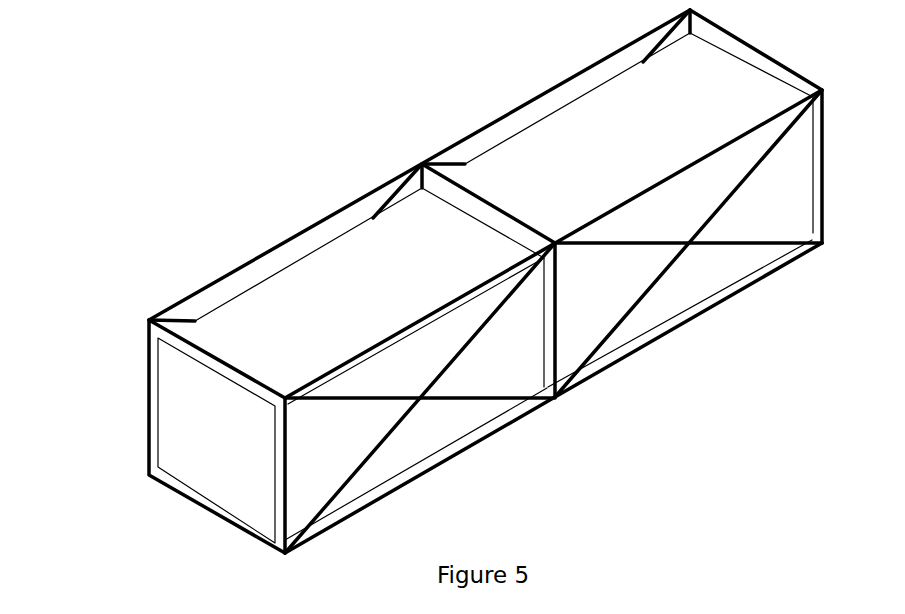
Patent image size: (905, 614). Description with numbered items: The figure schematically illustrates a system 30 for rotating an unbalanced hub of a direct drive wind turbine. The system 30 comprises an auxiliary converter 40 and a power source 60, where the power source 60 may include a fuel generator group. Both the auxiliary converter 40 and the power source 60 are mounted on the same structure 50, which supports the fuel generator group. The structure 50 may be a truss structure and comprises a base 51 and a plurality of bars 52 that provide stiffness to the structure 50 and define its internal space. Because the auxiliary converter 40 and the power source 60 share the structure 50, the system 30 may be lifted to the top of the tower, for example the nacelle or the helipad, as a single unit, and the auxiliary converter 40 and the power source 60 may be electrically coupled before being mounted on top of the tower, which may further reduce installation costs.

The system 30 is at (200, 216).
The auxiliary converter 40 is at (208, 467).
The structure 50 is at (148, 362).
The base 51 is at (384, 491).
The bars 52 is at (470, 357).
The power source 60 is at (692, 287).